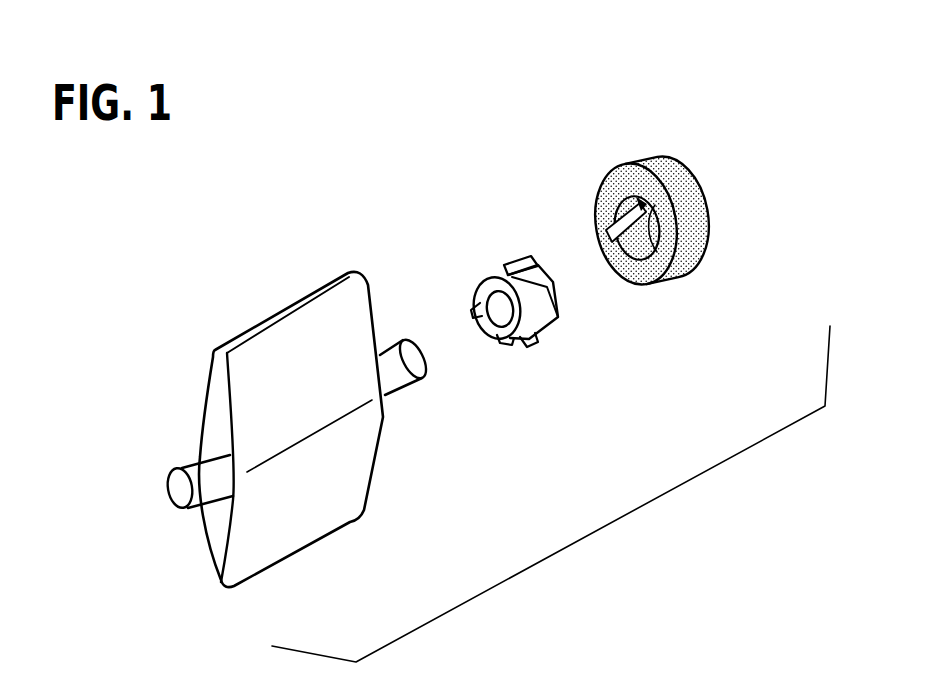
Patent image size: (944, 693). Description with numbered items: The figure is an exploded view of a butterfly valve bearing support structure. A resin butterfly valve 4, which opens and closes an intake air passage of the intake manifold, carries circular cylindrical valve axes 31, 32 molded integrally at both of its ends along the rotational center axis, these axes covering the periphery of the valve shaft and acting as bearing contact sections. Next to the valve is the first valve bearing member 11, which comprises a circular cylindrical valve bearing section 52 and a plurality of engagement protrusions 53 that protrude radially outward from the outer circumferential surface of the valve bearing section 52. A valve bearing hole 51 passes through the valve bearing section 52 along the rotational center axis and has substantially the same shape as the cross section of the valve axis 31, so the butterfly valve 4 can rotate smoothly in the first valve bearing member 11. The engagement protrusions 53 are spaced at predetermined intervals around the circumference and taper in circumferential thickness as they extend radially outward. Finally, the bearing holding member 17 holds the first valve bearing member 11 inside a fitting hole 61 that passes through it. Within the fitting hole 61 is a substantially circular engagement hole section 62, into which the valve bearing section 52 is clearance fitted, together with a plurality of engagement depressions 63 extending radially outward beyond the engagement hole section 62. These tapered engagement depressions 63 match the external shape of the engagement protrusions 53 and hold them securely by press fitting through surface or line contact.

The butterfly valve 4 is at (272, 338).
The valve axis 31 is at (411, 368).
The valve axis 32 is at (186, 462).
The first valve bearing member 11 is at (496, 276).
The valve bearing hole 51 is at (503, 312).
The valve bearing section 52 is at (539, 293).
The engagement protrusion 53 is at (518, 262).
The bearing holding member 17 is at (648, 231).
The fitting hole 61 is at (654, 285).
The engagement hole section 62 is at (642, 257).
The engagement depression 63 is at (592, 232).